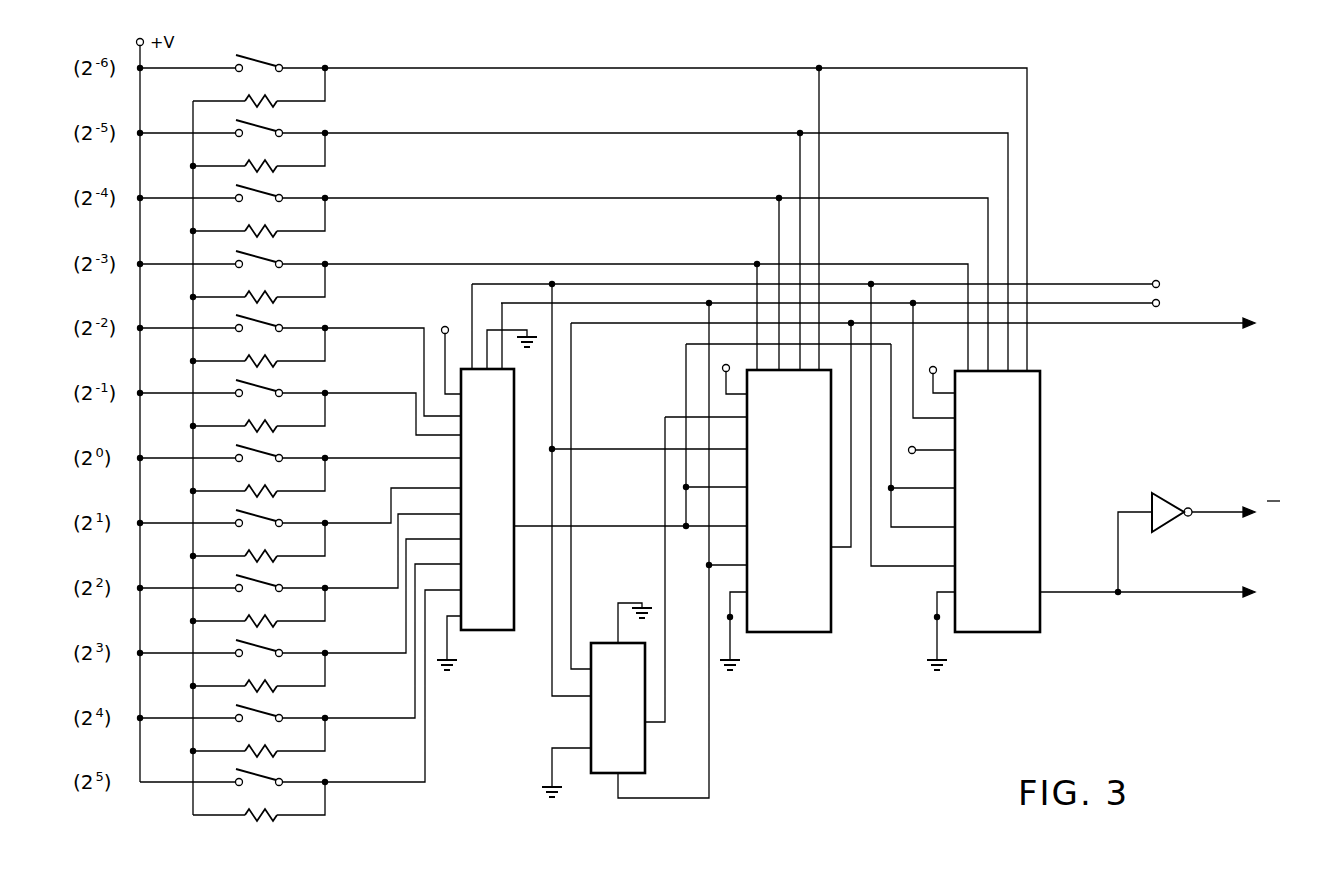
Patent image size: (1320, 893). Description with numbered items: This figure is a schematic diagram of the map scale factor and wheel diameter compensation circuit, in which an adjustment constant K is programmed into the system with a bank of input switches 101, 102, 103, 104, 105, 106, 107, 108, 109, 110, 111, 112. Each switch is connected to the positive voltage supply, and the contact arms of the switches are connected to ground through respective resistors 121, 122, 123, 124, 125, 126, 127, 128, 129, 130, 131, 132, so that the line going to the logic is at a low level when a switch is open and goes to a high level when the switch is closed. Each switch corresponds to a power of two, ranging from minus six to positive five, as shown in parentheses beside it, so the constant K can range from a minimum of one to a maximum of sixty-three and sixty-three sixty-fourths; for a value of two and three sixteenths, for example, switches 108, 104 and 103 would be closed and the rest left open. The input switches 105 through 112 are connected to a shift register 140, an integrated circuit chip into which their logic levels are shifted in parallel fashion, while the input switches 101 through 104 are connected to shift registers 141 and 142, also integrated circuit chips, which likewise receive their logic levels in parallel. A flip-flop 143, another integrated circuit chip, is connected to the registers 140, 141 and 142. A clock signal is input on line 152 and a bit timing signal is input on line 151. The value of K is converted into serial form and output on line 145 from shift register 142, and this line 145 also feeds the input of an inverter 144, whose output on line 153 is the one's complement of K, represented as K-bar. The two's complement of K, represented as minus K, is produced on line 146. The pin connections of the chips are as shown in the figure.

The input switch 101 is at (263, 62).
The input switch 102 is at (263, 127).
The input switch 103 is at (263, 192).
The input switch 104 is at (263, 258).
The input switch 105 is at (263, 322).
The input switch 106 is at (263, 387).
The input switch 107 is at (263, 452).
The input switch 108 is at (263, 517).
The input switch 109 is at (263, 582).
The input switch 110 is at (263, 647).
The input switch 111 is at (263, 712).
The input switch 112 is at (263, 776).
The resistor 121 is at (250, 97).
The resistor 122 is at (250, 162).
The resistor 123 is at (250, 227).
The resistor 124 is at (250, 293).
The resistor 125 is at (250, 357).
The resistor 126 is at (250, 422).
The resistor 127 is at (250, 487).
The resistor 128 is at (250, 552).
The resistor 129 is at (250, 617).
The resistor 130 is at (250, 682).
The resistor 131 is at (250, 747).
The resistor 132 is at (250, 811).
The shift register 140 is at (492, 618).
The shift register 141 is at (804, 477).
The shift register 142 is at (1017, 478).
The flip-flop 143 is at (603, 716).
The inverter 144 is at (1165, 508).
The line 145 is at (1101, 590).
The line 146 is at (1177, 326).
The line 151 is at (1083, 305).
The line 152 is at (1103, 284).
The line 153 is at (1241, 496).